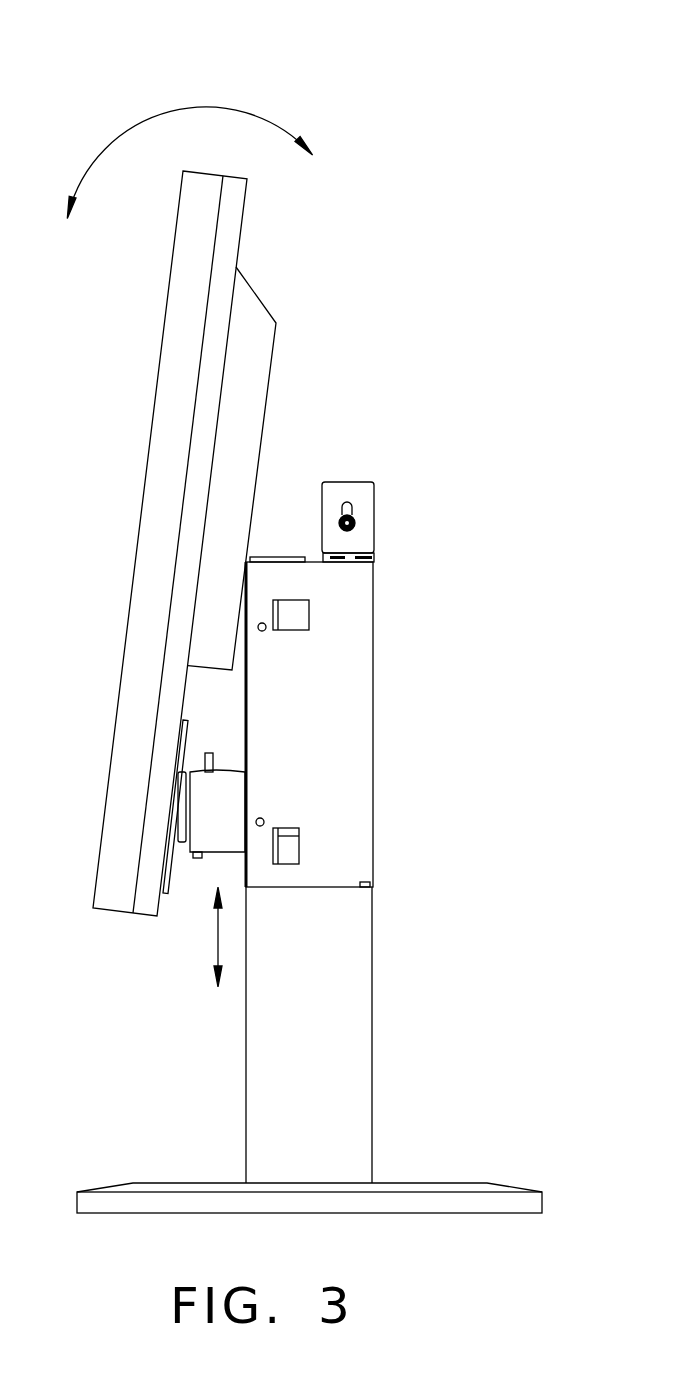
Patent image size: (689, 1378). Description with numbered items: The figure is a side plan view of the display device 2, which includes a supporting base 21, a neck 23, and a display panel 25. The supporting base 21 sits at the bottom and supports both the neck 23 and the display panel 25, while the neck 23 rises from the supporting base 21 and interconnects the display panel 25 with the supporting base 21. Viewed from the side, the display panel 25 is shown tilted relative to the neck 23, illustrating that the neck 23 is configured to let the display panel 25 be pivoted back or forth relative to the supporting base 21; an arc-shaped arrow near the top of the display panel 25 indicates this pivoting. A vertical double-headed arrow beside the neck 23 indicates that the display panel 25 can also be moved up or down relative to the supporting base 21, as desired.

The display device 2 is at (302, 48).
The supporting base 21 is at (523, 1200).
The neck 23 is at (357, 687).
The display panel 25 is at (248, 408).